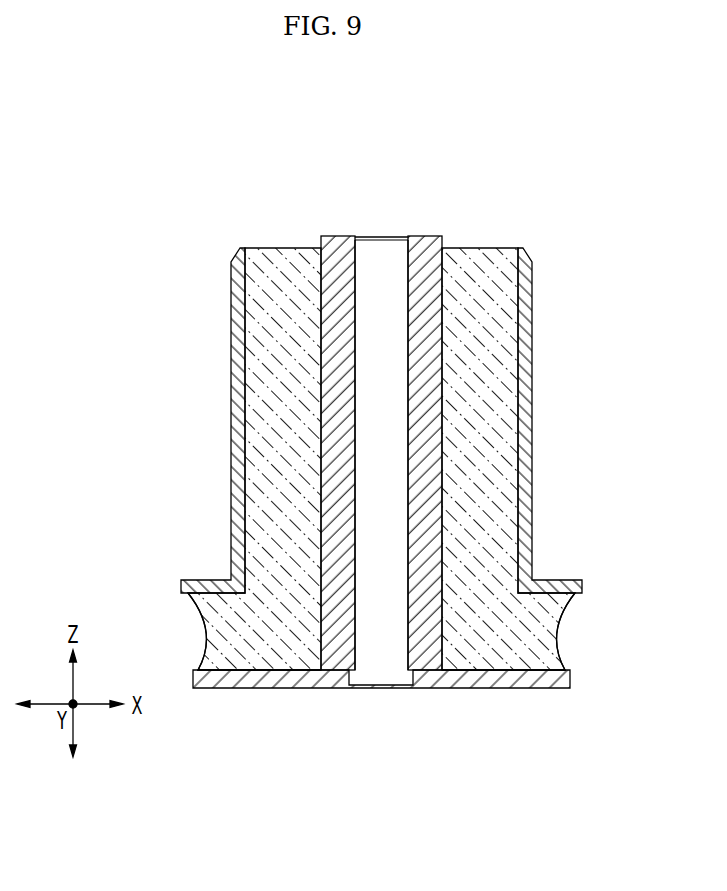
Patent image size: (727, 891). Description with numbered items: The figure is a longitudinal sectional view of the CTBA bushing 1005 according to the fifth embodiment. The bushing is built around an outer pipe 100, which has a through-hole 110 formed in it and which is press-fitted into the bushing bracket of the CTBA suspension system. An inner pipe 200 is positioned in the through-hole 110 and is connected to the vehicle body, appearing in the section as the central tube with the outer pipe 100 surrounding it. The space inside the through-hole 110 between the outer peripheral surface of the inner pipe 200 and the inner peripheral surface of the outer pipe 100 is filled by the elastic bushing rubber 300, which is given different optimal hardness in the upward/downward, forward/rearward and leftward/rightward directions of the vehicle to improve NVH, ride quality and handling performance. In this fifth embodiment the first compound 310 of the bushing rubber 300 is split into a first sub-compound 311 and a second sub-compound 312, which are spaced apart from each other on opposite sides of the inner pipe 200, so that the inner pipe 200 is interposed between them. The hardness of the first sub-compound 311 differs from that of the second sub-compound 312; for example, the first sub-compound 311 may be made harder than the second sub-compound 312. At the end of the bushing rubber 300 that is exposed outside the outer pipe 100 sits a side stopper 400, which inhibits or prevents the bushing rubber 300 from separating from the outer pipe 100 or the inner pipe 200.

The CTBA bushing 1005 is at (357, 167).
The outer pipe 100 is at (527, 424).
The through-hole 110 is at (384, 322).
The inner pipe 200 is at (427, 243).
The bushing rubber 300 is at (263, 440).
The first compound 310 is at (262, 498).
The first sub-compound 311 is at (288, 550).
The second sub-compound 312 is at (485, 547).
The side stopper 400 is at (437, 684).